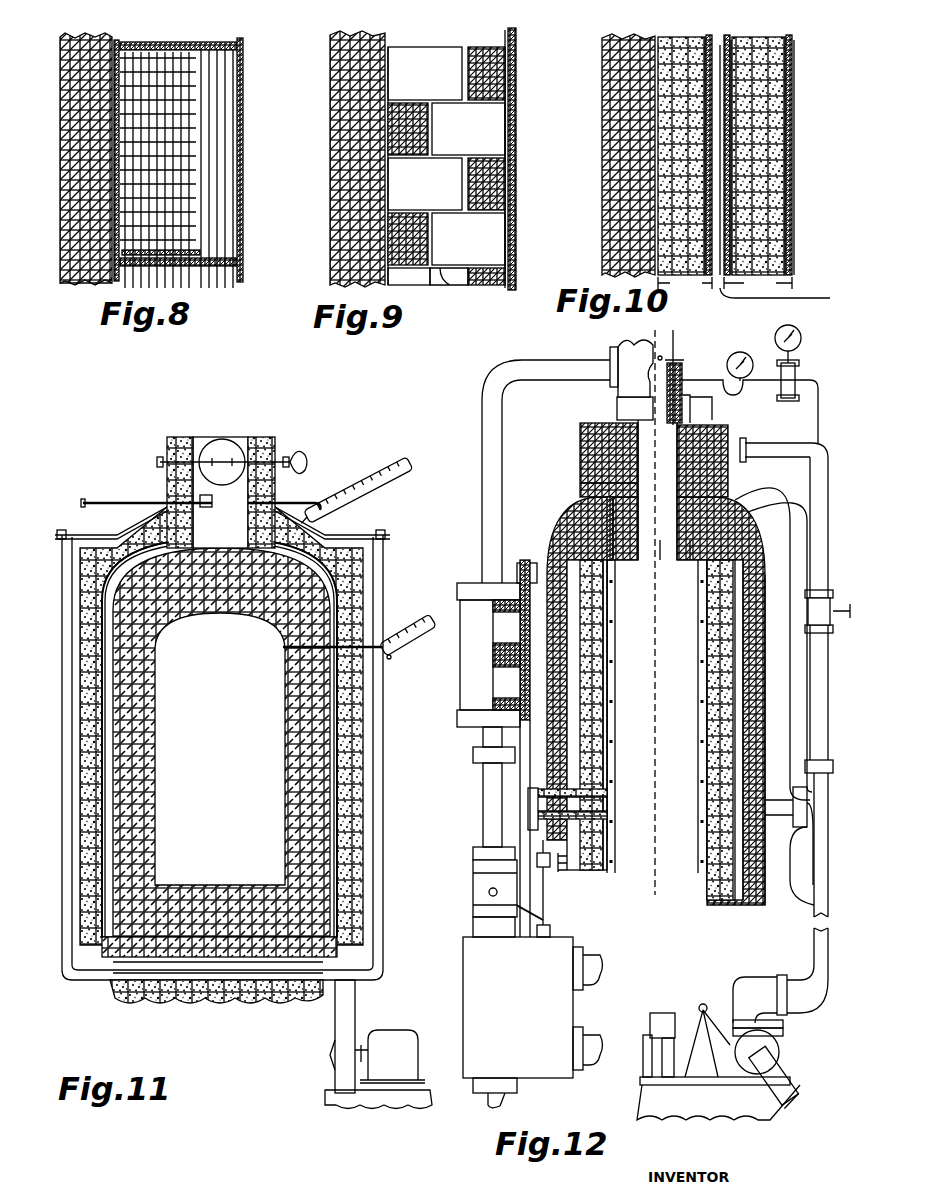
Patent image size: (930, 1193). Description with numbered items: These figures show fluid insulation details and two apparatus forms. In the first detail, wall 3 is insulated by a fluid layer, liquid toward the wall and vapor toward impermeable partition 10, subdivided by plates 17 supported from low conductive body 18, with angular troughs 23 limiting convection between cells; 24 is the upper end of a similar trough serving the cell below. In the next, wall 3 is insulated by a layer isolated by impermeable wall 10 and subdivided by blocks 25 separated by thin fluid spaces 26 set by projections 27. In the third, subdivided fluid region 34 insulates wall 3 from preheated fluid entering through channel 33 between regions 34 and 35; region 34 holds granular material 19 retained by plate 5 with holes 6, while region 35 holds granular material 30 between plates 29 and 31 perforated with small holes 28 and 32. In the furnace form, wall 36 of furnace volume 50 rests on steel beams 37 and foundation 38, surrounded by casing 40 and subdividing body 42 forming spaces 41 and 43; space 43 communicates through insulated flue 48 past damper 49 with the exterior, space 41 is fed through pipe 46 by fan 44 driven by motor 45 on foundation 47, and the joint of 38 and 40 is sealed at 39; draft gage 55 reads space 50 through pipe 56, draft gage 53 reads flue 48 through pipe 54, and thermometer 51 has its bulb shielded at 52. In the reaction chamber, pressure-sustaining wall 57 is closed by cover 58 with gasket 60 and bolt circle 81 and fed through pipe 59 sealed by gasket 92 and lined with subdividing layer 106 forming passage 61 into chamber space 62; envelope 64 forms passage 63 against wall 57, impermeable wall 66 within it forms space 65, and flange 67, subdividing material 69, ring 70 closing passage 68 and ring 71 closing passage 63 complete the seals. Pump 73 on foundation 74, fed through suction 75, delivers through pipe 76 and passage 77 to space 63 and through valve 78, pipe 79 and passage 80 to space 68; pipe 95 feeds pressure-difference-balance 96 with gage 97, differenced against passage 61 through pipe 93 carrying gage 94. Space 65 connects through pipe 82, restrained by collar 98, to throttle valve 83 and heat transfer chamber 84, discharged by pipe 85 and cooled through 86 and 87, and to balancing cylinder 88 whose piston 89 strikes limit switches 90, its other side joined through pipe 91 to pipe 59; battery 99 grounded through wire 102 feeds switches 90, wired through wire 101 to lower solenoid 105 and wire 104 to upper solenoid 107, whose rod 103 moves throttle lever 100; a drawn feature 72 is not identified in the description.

In FIG. 8, the wall 3 is at (62, 70).
In FIG. 9, the wall 3 is at (332, 65).
In FIG. 10, the wall 3 is at (604, 60).
In FIG. 10, the plate 5 is at (708, 38).
In FIG. 10, the holes 6 is at (719, 48).
In FIG. 8, the impermeable partition 10 is at (245, 52).
In FIG. 9, the impermeable partition 10 is at (517, 33).
In FIG. 8, the plates 17 is at (218, 115).
In FIG. 8, the low conductive body 18 is at (175, 45).
In FIG. 10, the granular material 19 is at (680, 40).
In FIG. 8, the angular troughs 23 is at (118, 42).
In FIG. 8, the upper end of trough 24 is at (72, 286).
In FIG. 9, the blocks 25 is at (424, 50).
In FIG. 9, the thin fluid spaces 26 is at (467, 47).
In FIG. 9, the projections 27 is at (440, 286).
In FIG. 10, the small holes 28 is at (727, 45).
In FIG. 10, the plate 29 is at (733, 50).
In FIG. 10, the granular material 30 is at (760, 40).
In FIG. 10, the plate 31 is at (793, 45).
In FIG. 10, the small holes 32 is at (794, 56).
In FIG. 10, the channel 33 is at (791, 297).
In FIG. 10, the subdivided fluid region 34 is at (685, 284).
In FIG. 10, the fluid region 35 is at (758, 284).
In FIG. 11, the furnace wall 36 is at (150, 658).
In FIG. 11, the steel beams 37 is at (75, 978).
In FIG. 11, the foundation 38 is at (112, 1002).
In FIG. 11, the seal 39 is at (100, 975).
In FIG. 11, the casing 40 is at (70, 614).
In FIG. 11, the space 41 is at (84, 652).
In FIG. 11, the subdividing body 42 is at (103, 676).
In FIG. 11, the space 43 is at (113, 700).
In FIG. 11, the fan 44 is at (333, 1059).
In FIG. 11, the motor 45 is at (380, 1034).
In FIG. 11, the pipe 46 is at (357, 990).
In FIG. 11, the foundation 47 is at (330, 1100).
In FIG. 11, the insulated flue 48 is at (240, 433).
In FIG. 11, the damper 49 is at (210, 440).
In FIG. 11, the furnace volume 50 is at (222, 726).
In FIG. 11, the thermometer 51 is at (130, 500).
In FIG. 11, the shield 52 is at (210, 507).
In FIG. 11, the draft gage 53 is at (378, 492).
In FIG. 11, the pipe 54 is at (290, 502).
In FIG. 11, the draft gage 55 is at (390, 660).
In FIG. 11, the pipe 56 is at (387, 626).
In FIG. 12, the pressure-sustaining wall 57 is at (735, 512).
In FIG. 12, the cover 58 is at (580, 452).
In FIG. 12, the feed pipe 59 is at (645, 368).
In FIG. 12, the gasket 60 is at (702, 461).
In FIG. 12, the fluid passage 61 is at (684, 405).
In FIG. 12, the reaction chamber space 62 is at (642, 712).
In FIG. 12, the passage 63 is at (737, 605).
In FIG. 12, the subdividing envelope 64 is at (740, 628).
In FIG. 12, the space 65 is at (726, 660).
In FIG. 12, the impermeable wall 66 is at (715, 700).
In FIG. 12, the flange 67 is at (676, 616).
In FIG. 12, the passage 68 is at (678, 562).
In FIG. 12, the subdividing material 69 is at (668, 597).
In FIG. 12, the ring 70 is at (629, 565).
In FIG. 12, the ring 71 is at (609, 536).
In FIG. 12, the tube sleeve 72 is at (611, 553).
In FIG. 12, the pump 73 is at (790, 1022).
In FIG. 12, the foundation 74 is at (755, 1115).
In FIG. 12, the suction 75 is at (792, 1090).
In FIG. 12, the pipe 76 is at (822, 876).
In FIG. 12, the passage 77 is at (760, 830).
In FIG. 12, the valve 78 is at (836, 596).
In FIG. 12, the pipe 79 is at (828, 502).
In FIG. 12, the passage 80 is at (752, 430).
In FIG. 12, the bolt circle 81 is at (714, 418).
In FIG. 12, the pipe 82 is at (575, 808).
In FIG. 12, the throttle valve 83 is at (473, 895).
In FIG. 12, the heat transfer chamber 84 is at (470, 942).
In FIG. 12, the pipe 85 is at (505, 1101).
In FIG. 12, the cooling medium inlet 86 is at (603, 968).
In FIG. 12, the cooling medium outlet 87 is at (598, 1038).
In FIG. 12, the balancing cylinder 88 is at (462, 708).
In FIG. 12, the piston 89 is at (493, 659).
In FIG. 12, the limit switches 90 is at (497, 640).
In FIG. 12, the pipe 91 is at (482, 422).
In FIG. 12, the gasket 92 is at (609, 457).
In FIG. 12, the pipe 93 is at (696, 378).
In FIG. 12, the gage 94 is at (744, 352).
In FIG. 12, the pipe 95 is at (825, 420).
In FIG. 12, the pressure-difference-balance 96 is at (800, 370).
In FIG. 12, the pressure-difference gage 97 is at (801, 338).
In FIG. 12, the collar 98 is at (570, 793).
In FIG. 12, the battery 99 is at (565, 876).
In FIG. 12, the throttle lever 100 is at (553, 900).
In FIG. 12, the wire 101 is at (525, 563).
In FIG. 12, the wire 102 is at (657, 897).
In FIG. 12, the rod 103 is at (549, 929).
In FIG. 12, the wire 104 is at (528, 808).
In FIG. 12, the lower solenoid 105 is at (560, 936).
In FIG. 12, the subdividing layer 106 is at (662, 357).
In FIG. 12, the upper solenoid 107 is at (520, 846).